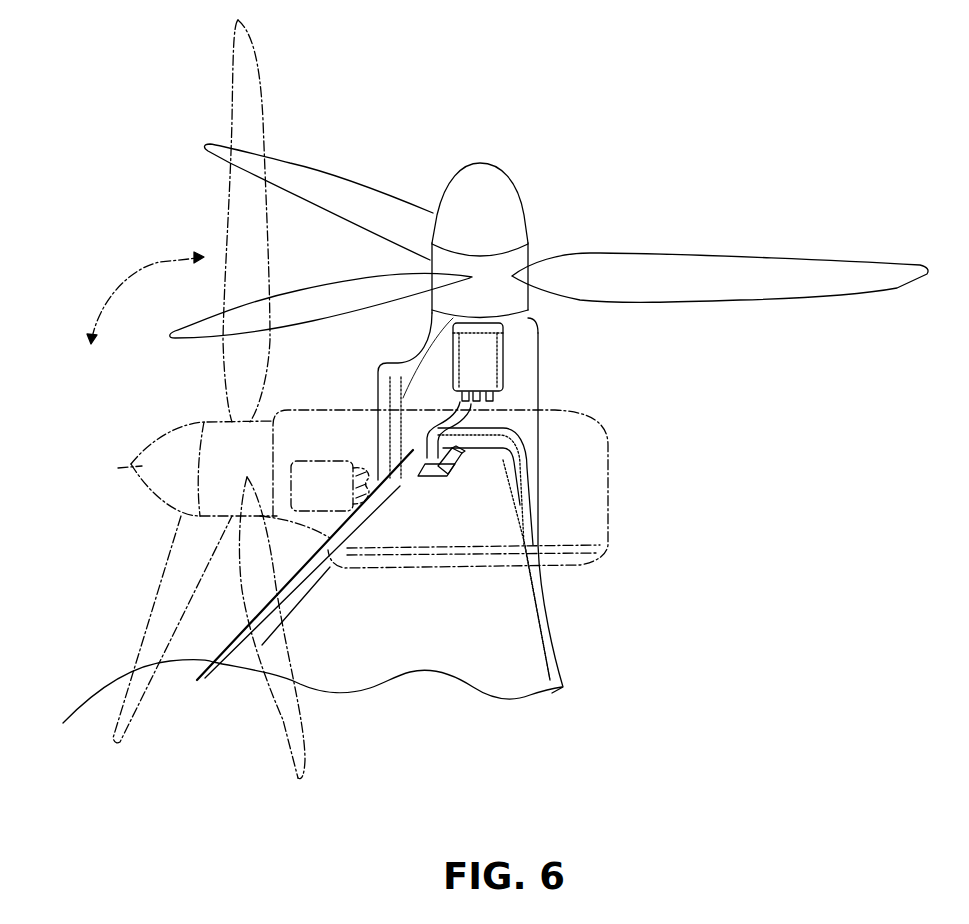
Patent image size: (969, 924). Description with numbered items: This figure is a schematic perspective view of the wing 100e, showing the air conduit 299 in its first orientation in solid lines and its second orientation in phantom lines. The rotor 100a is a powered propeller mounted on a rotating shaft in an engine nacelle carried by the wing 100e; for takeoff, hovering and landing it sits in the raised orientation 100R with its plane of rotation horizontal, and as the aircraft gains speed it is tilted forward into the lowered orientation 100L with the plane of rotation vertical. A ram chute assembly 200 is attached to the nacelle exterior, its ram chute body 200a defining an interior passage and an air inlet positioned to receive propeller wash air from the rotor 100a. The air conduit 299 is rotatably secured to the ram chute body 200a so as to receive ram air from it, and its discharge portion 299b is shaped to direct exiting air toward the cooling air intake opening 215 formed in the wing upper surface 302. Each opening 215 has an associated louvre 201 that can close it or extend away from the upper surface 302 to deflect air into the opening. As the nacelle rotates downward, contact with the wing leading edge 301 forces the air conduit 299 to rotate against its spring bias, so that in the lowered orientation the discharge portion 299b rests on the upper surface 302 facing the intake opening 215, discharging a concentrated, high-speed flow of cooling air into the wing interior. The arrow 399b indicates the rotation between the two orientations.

The raised orientation 100R is at (583, 205).
The lowered orientation 100L is at (118, 448).
The rotor 100a is at (484, 190).
The wing 100e is at (517, 633).
The ram chute assembly 200 is at (511, 357).
The ram chute body 200a is at (550, 330).
The louvre 201 is at (445, 453).
The cooling air intake opening 215 is at (420, 462).
The air conduit 299 is at (437, 427).
The discharge portion 299b is at (427, 453).
The leading edge 301 is at (302, 706).
The upper surface 302 is at (439, 602).
The rotation direction arrow 399b is at (121, 225).